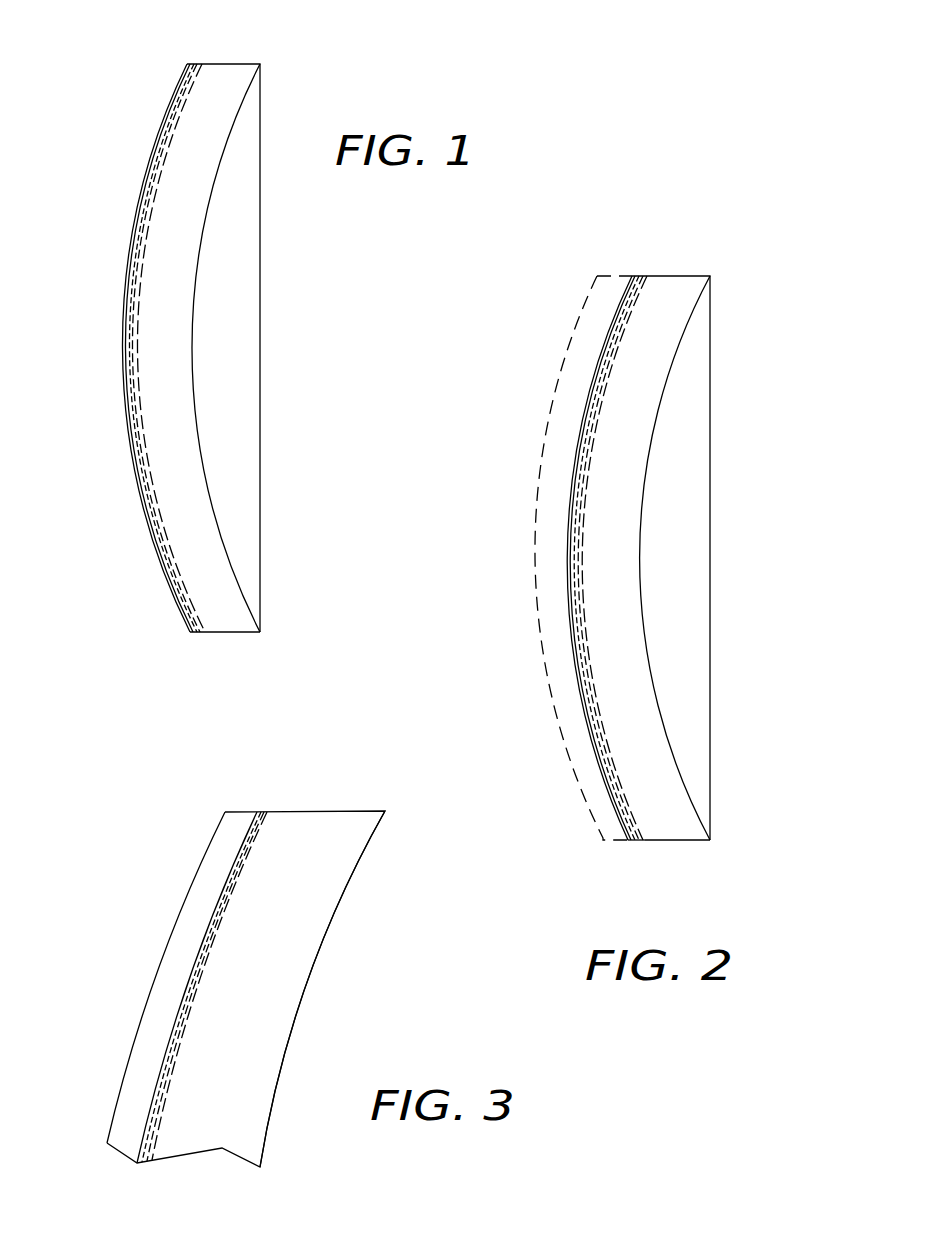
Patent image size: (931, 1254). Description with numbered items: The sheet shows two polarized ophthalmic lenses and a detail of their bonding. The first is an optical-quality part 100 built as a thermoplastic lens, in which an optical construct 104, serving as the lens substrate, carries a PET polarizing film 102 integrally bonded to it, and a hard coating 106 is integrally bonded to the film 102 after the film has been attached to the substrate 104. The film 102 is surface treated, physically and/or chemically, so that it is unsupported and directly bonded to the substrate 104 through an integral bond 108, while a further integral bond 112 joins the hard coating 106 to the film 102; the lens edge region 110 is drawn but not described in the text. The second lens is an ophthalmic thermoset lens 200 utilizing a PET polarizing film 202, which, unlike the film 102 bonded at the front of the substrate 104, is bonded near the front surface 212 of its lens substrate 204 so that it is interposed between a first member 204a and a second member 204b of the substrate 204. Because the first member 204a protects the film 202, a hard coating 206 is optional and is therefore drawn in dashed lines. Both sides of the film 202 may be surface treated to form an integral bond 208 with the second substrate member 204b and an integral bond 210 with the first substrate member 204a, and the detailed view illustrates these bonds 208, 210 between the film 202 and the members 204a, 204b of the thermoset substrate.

In FIG. 1, the optical-quality part 100 is at (146, 68).
In FIG. 1, the PET polarizing film 102 is at (157, 171).
In FIG. 1, the optical construct 104 is at (242, 362).
In FIG. 1, the hard coating 106 is at (122, 349).
In FIG. 1, the integral bond 108 is at (189, 561).
In FIG. 1, the adhesive layer 110 is at (171, 594).
In FIG. 1, the integral bond 112 is at (201, 641).
In FIG. 2, the ophthalmic thermoset lens 200 is at (549, 279).
In FIG. 2, the PET polarizing film 202 is at (643, 277).
In FIG. 3, the PET polarizing film 202 is at (136, 1164).
In FIG. 2, the lens substrate 204 is at (692, 858).
In FIG. 2, the first member 204a is at (642, 842).
In FIG. 3, the first member 204a is at (135, 1080).
In FIG. 2, the second member 204b is at (711, 627).
In FIG. 3, the second member 204b is at (302, 1012).
In FIG. 2, the hard coating 206 is at (548, 682).
In FIG. 2, the integral bond 208 is at (598, 565).
In FIG. 3, the integral bond 208 is at (225, 963).
In FIG. 2, the integral bond 210 is at (568, 542).
In FIG. 3, the integral bond 210 is at (191, 952).
In FIG. 2, the front surface 212 is at (657, 853).